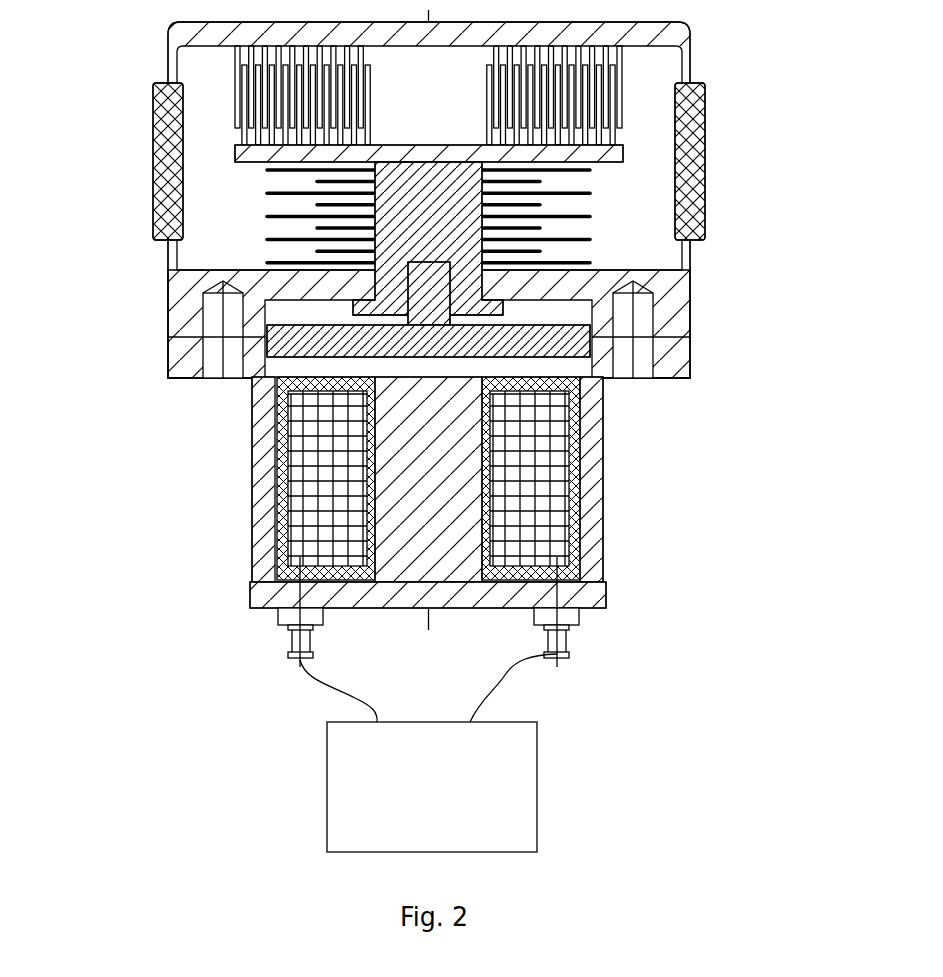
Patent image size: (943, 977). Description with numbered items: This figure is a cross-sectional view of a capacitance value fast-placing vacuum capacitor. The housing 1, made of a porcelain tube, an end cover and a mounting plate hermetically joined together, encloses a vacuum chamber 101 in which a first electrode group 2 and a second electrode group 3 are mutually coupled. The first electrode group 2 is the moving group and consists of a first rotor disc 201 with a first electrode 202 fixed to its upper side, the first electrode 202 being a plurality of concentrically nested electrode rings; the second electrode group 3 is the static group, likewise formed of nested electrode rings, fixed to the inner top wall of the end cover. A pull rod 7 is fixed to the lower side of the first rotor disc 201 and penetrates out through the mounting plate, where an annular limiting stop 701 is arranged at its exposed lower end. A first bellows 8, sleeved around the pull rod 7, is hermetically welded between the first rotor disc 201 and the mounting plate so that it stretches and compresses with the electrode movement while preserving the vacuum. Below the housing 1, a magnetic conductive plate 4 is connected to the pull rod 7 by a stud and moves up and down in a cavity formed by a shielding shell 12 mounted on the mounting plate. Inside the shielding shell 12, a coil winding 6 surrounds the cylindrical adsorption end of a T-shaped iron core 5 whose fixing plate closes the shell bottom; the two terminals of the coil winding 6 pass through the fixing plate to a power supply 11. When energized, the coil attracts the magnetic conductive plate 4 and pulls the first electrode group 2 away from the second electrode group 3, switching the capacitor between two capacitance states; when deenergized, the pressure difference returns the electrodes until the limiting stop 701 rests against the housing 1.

The housing 1 is at (153, 143).
The vacuum chamber 101 is at (213, 88).
The first electrode group 2 is at (797, 121).
The first rotor disc 201 is at (622, 162).
The first electrode 202 is at (622, 133).
The second electrode group 3 is at (622, 82).
The magnetic conductive plate 4 is at (264, 347).
The iron core 5 is at (465, 526).
The coil winding 6 is at (317, 492).
The pull rod 7 is at (655, 278).
The limiting stop 701 is at (578, 388).
The first bellows 8 is at (262, 245).
The power supply 11 is at (537, 785).
The shielding shell 12 is at (262, 546).